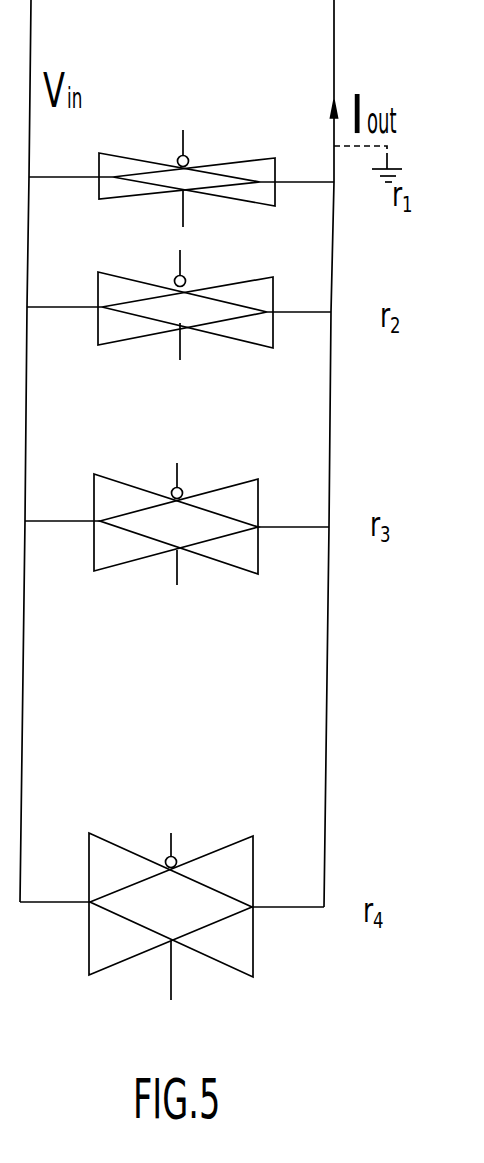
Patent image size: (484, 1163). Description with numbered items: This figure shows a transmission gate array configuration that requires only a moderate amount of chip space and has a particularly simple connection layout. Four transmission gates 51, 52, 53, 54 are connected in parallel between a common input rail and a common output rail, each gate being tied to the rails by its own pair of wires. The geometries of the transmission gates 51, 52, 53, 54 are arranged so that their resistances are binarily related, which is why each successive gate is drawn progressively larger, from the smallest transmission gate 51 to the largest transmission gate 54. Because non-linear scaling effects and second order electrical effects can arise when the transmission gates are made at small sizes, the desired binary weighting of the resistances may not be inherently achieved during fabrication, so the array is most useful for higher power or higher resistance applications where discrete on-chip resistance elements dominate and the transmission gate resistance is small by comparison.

The transmission gate 51 is at (260, 157).
The transmission gate 52 is at (260, 275).
The transmission gate 53 is at (247, 480).
The transmission gate 54 is at (242, 837).